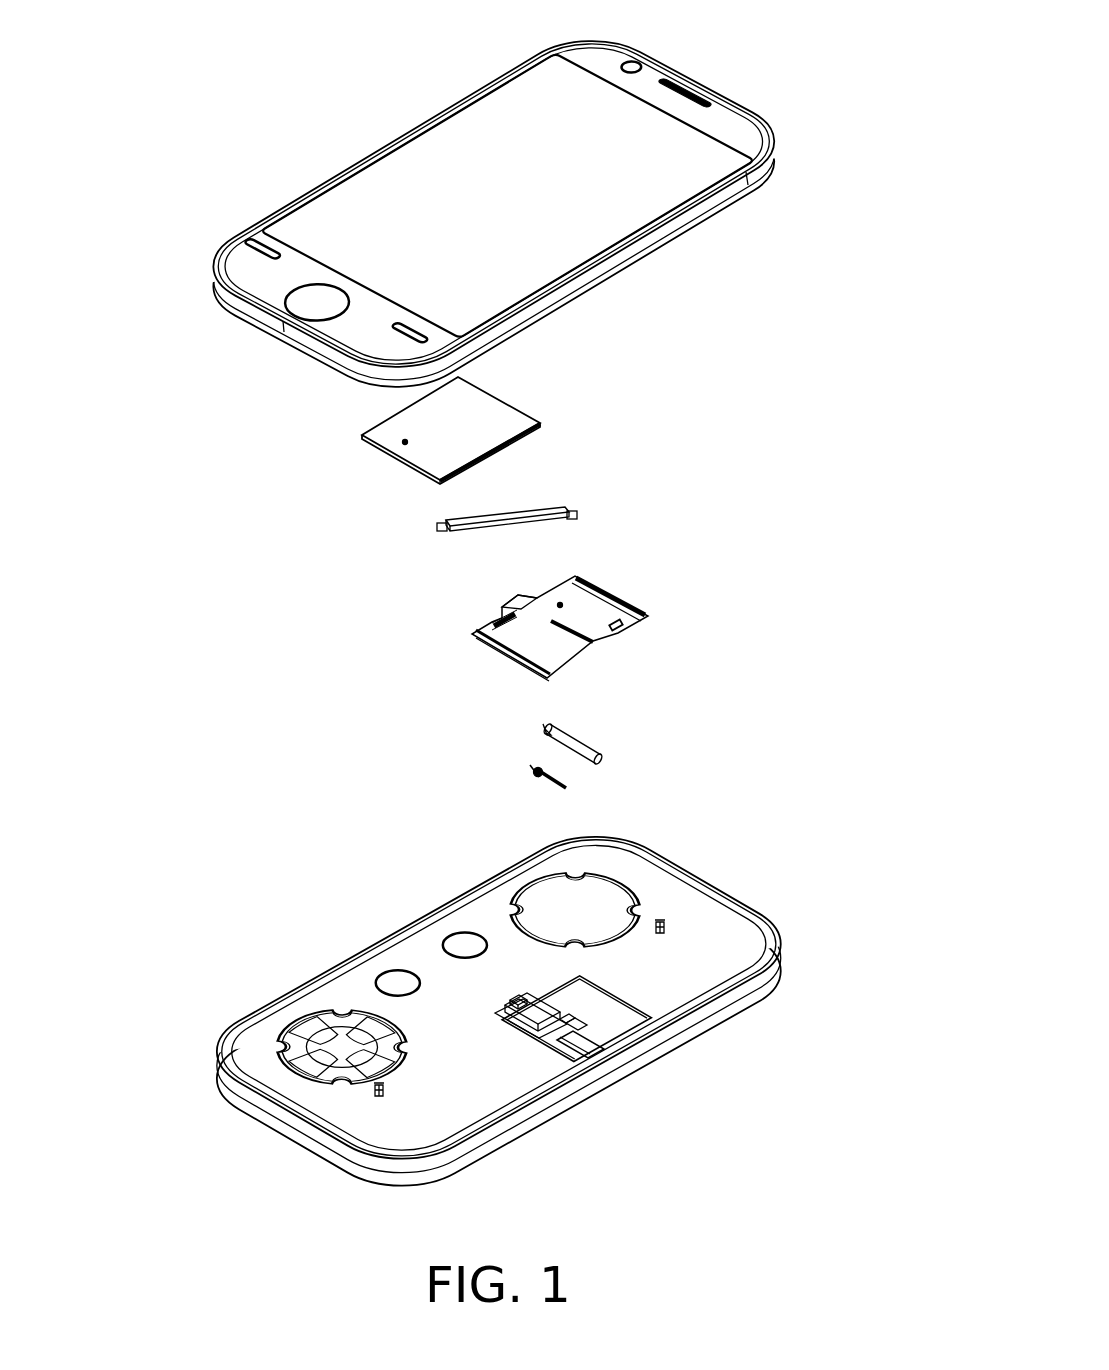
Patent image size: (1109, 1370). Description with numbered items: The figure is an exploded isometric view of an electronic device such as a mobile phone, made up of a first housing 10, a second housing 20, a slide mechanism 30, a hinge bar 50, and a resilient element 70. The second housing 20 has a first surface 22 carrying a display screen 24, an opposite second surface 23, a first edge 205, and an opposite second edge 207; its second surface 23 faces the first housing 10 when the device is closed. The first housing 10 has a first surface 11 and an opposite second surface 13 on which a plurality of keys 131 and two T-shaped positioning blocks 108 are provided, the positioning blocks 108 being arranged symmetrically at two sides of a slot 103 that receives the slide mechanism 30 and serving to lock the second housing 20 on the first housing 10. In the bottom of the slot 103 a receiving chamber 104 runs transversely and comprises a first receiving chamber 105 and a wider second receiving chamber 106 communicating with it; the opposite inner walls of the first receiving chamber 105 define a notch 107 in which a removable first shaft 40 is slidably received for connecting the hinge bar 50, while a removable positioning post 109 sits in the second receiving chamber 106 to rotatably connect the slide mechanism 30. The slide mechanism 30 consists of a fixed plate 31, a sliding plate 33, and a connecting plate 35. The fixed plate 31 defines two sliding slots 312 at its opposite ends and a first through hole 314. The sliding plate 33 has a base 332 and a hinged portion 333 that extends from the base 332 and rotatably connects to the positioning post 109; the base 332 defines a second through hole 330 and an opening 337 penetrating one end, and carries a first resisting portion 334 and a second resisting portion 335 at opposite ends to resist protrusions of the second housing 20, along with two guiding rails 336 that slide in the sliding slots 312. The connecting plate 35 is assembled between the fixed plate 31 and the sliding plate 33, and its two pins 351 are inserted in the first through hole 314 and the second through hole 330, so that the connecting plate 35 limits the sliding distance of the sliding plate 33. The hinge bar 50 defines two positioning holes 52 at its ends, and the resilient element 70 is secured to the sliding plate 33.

The first housing 10 is at (512, 1024).
The first surface 11 is at (723, 1013).
The second surface 13 is at (445, 1102).
The second housing 20 is at (511, 214).
The first surface 22 is at (252, 268).
The second surface 23 is at (607, 275).
The display screen 24 is at (410, 190).
The slide mechanism 30 is at (237, 443).
The fixed plate 31 is at (434, 430).
The sliding slots 312 is at (540, 426).
The first through hole 314 is at (403, 440).
The sliding plate 33 is at (484, 626).
The second through hole 330 is at (561, 602).
The base 332 is at (615, 613).
The hinged portion 333 is at (515, 603).
The first resisting portion 334 is at (495, 617).
The second resisting portion 335 is at (613, 627).
The guiding rails 336 is at (534, 668).
The opening 337 is at (585, 645).
The connecting plate 35 is at (458, 516).
The pins 351 is at (440, 529).
The first shaft 40 is at (562, 1033).
The hinge bar 50 is at (615, 737).
The positioning holes 52 is at (598, 760).
The resilient element 70 is at (530, 765).
The slot 103 is at (617, 1018).
The receiving chamber 104 is at (587, 1108).
The first receiving chamber 105 is at (568, 1042).
The second receiving chamber 106 is at (527, 1030).
The notch 107 is at (612, 1053).
The positioning blocks 108 is at (378, 1093).
The positioning post 109 is at (502, 993).
The keys 131 is at (392, 985).
The first edge 205 is at (310, 185).
The second edge 207 is at (713, 198).